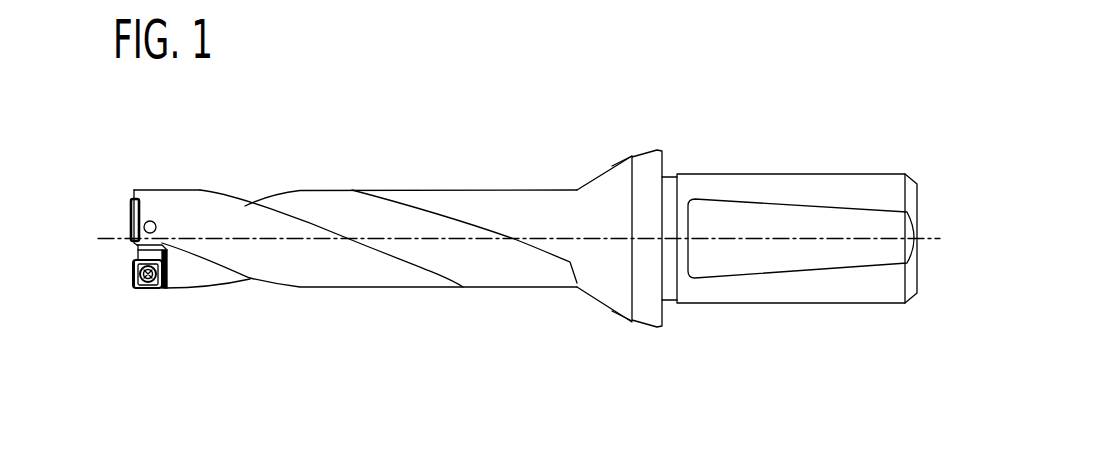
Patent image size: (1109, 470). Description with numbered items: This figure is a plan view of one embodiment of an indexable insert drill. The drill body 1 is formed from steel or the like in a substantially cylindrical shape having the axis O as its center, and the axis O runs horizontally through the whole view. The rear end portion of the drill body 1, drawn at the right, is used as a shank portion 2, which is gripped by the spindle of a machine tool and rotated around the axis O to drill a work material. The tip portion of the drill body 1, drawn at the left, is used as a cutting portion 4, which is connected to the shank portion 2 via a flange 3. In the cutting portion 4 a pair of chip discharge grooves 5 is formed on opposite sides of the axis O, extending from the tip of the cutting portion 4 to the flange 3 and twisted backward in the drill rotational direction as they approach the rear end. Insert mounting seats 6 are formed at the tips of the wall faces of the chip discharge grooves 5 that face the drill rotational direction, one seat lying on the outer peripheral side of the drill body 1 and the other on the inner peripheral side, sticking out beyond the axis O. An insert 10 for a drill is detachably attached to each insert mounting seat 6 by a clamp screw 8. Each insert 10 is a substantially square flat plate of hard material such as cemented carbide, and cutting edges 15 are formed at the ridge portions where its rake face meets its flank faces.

The drill body 1 is at (640, 48).
The shank portion 2 is at (735, 151).
The flange 3 is at (612, 142).
The cutting portion 4 is at (494, 154).
The chip discharge grooves 5 is at (220, 280).
The insert mounting seats 6 is at (173, 273).
The clamp screw 8 is at (155, 286).
The insert 10 is at (125, 214).
The cutting edges 15 is at (128, 215).
The axis O is at (558, 238).